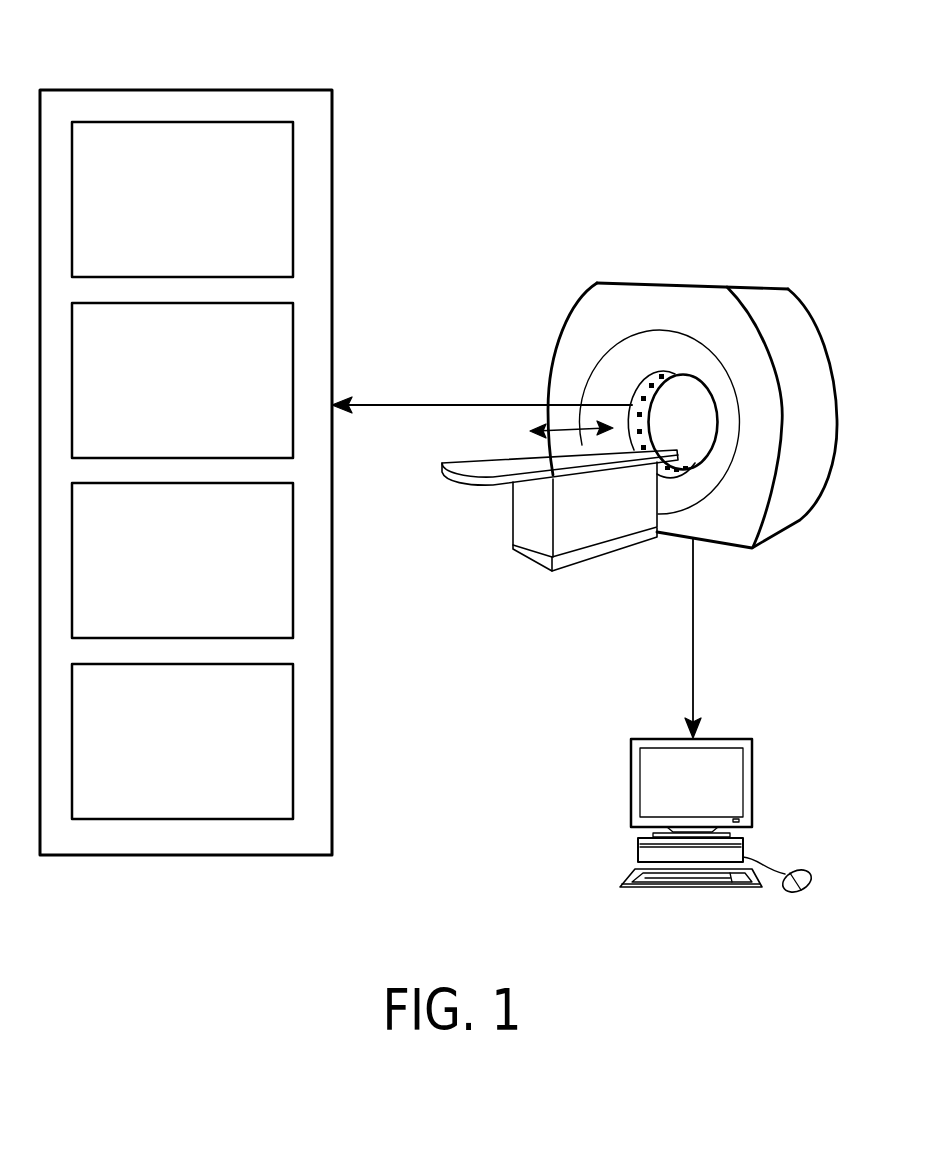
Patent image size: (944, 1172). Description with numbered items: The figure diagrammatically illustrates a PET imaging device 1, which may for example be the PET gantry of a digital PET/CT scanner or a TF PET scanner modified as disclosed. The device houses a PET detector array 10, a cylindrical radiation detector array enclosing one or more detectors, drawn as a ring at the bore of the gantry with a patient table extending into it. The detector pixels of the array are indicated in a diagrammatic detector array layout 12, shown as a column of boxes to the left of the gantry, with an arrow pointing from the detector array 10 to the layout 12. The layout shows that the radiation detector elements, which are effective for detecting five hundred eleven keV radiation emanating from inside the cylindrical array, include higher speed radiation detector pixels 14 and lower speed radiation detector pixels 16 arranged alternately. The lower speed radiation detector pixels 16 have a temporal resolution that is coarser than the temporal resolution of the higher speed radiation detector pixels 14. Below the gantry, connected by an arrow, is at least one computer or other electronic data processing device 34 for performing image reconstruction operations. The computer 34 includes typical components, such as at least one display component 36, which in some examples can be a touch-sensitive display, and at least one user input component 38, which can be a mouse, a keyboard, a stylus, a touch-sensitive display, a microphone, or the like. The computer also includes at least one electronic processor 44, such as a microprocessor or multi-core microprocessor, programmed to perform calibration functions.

The PET imaging device 1 is at (802, 273).
The PET detector array 10 is at (637, 398).
The diagrammatic detector array layout 12 is at (190, 101).
The higher speed radiation detector pixel 14 is at (168, 251).
The lower speed radiation detector pixel 16 is at (168, 432).
The computer 34 is at (766, 731).
The display component 36 is at (647, 783).
The user input component 38 is at (718, 878).
The electronic processor 44 is at (638, 842).